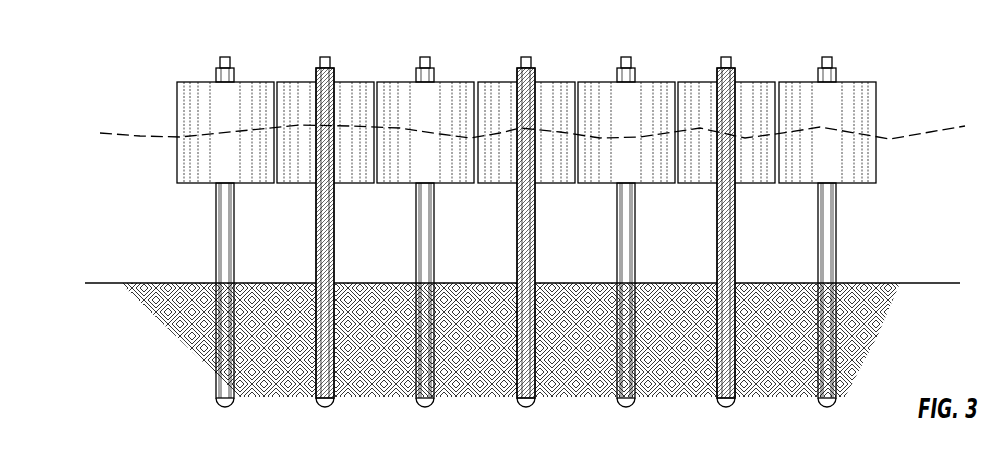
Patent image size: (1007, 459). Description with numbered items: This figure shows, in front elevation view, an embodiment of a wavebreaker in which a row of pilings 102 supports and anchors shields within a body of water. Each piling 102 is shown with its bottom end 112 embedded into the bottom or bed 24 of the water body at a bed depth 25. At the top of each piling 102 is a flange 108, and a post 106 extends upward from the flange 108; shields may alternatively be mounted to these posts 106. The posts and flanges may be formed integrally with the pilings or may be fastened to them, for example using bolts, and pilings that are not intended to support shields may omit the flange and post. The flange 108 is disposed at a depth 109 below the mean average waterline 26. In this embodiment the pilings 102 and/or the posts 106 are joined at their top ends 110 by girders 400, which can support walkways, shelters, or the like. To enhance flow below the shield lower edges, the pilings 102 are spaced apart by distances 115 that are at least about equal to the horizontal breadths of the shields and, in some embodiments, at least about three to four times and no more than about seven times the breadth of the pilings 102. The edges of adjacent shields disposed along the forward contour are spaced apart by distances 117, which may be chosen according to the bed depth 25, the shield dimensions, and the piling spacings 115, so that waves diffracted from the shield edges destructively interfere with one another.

The bed 24 is at (201, 328).
The bed depth 25 is at (107, 134).
The mean average waterline 26 is at (146, 136).
The piling 102 is at (236, 244).
The post 106 is at (236, 77).
The flange 108 is at (399, 250).
The depth 109 is at (425, 130).
The top end 110 is at (331, 68).
The bottom end 112 is at (323, 407).
The distance 115 is at (615, 227).
The distance 117 is at (671, 108).
The girder 400 is at (830, 62).